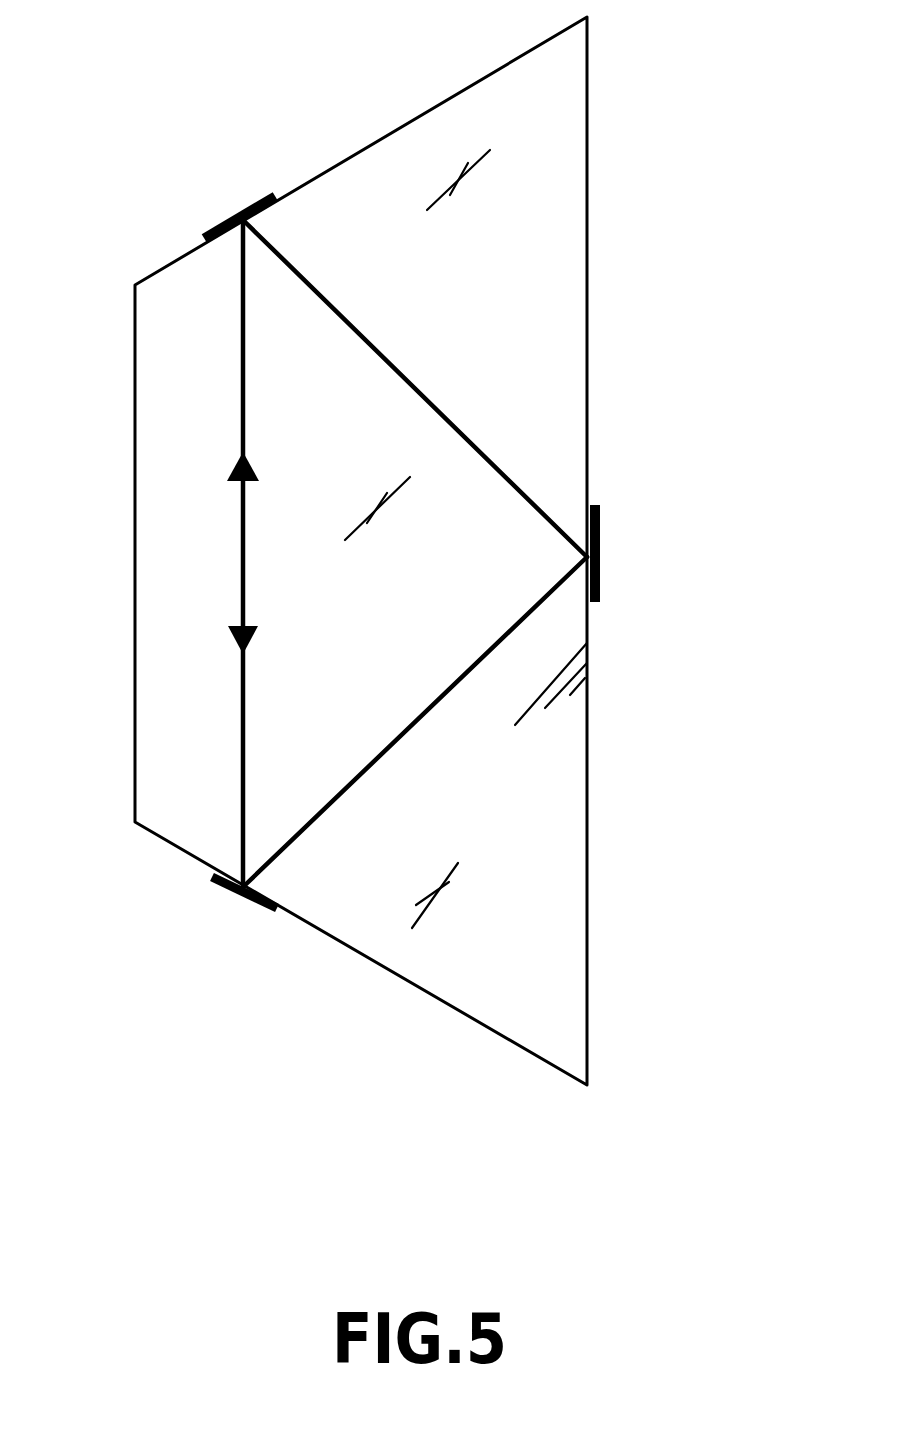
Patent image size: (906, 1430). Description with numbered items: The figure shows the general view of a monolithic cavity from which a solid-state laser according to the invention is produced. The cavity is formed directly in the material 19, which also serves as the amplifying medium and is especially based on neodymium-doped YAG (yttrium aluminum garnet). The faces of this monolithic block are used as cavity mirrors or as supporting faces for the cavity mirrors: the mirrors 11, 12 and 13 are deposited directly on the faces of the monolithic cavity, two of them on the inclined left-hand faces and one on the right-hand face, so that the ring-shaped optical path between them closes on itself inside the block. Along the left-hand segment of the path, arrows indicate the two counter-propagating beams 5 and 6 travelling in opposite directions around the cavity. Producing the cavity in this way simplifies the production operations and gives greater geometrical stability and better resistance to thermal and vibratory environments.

The material of the cavity 19 is at (400, 160).
The mirror 12 is at (237, 217).
The mirror 11 is at (238, 903).
The mirror 13 is at (608, 558).
The upward light beam 5 is at (220, 465).
The downward light beam 6 is at (220, 637).